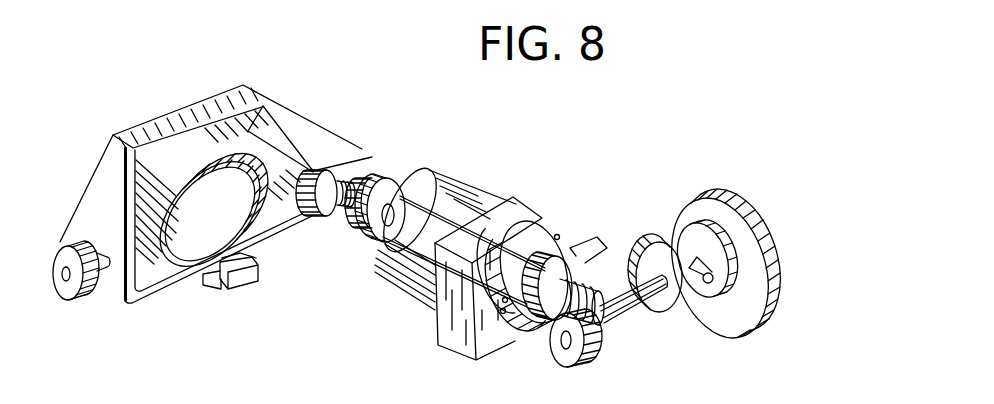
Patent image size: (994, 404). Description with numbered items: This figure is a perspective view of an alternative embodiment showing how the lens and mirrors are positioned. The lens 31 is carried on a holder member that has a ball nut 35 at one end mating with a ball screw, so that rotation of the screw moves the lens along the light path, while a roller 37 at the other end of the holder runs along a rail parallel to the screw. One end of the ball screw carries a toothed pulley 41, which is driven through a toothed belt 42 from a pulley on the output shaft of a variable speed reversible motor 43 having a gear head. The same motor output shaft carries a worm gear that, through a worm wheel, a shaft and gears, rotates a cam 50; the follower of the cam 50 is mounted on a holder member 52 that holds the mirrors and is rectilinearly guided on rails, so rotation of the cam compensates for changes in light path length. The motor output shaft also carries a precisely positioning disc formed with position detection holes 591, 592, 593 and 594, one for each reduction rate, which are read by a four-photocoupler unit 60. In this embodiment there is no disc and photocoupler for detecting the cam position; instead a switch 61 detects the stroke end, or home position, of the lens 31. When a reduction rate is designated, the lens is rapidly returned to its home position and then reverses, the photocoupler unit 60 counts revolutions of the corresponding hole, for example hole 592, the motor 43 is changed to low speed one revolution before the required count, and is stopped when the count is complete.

The lens 31 is at (165, 260).
The ball nut 35 is at (366, 152).
The roller 37 is at (91, 295).
The toothed pulley 41 is at (383, 177).
The toothed belt 42 is at (433, 171).
The variable speed reversible motor 43 is at (486, 197).
The cam 50 is at (735, 222).
The holder member 52 is at (142, 302).
The four-photocoupler unit 60 is at (585, 255).
The switch 61 is at (262, 268).
The position detection hole 591 is at (503, 301).
The position detection hole 592 is at (503, 314).
The position detection hole 593 is at (557, 235).
The position detection hole 594 is at (568, 247).